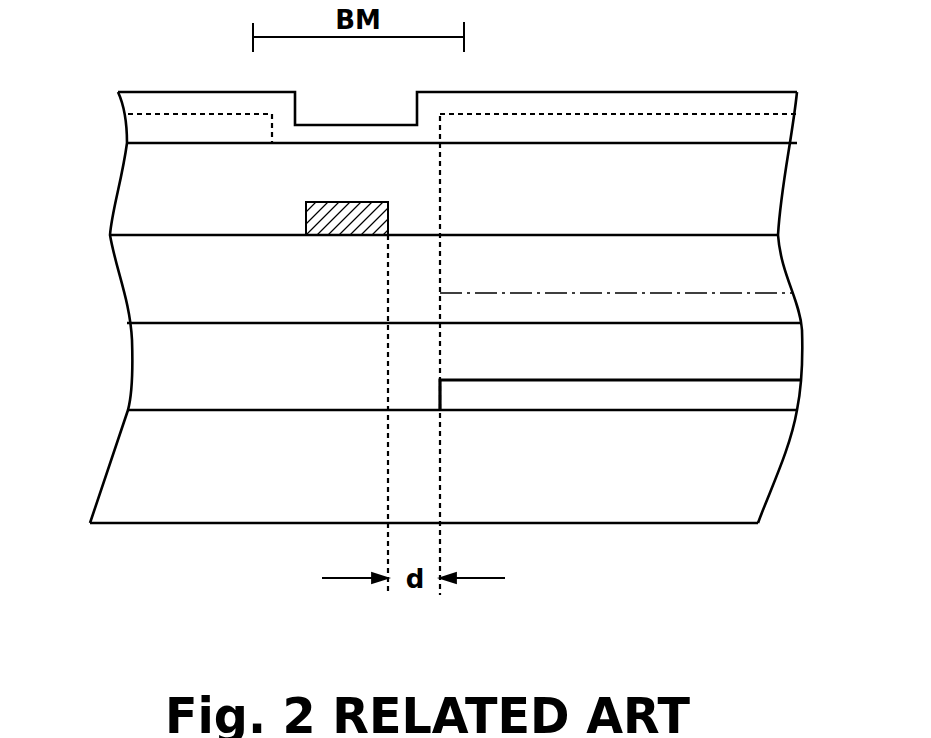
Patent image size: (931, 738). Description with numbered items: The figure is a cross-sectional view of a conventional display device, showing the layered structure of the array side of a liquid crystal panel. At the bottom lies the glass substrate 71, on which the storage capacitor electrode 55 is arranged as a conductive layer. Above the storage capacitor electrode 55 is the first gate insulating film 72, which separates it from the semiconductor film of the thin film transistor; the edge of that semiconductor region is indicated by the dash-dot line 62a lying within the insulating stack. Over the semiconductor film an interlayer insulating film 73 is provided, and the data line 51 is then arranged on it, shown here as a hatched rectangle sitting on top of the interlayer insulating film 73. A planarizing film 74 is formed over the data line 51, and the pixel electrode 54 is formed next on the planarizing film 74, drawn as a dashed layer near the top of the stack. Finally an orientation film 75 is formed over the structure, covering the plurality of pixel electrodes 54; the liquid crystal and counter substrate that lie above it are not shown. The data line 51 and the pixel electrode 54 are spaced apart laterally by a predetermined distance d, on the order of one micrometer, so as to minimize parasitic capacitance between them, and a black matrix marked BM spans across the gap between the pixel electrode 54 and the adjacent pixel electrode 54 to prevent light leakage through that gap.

The orientation film 75 is at (784, 96).
The pixel electrode 54 is at (784, 126).
The planarizing film 74 is at (762, 196).
The data line 51 is at (322, 218).
The interlayer insulating film 73 is at (762, 259).
The pixel electrode edge 62a is at (777, 308).
The first gate insulating film 72 is at (777, 347).
The storage capacitor electrode 55 is at (777, 393).
The glass substrate 71 is at (748, 479).